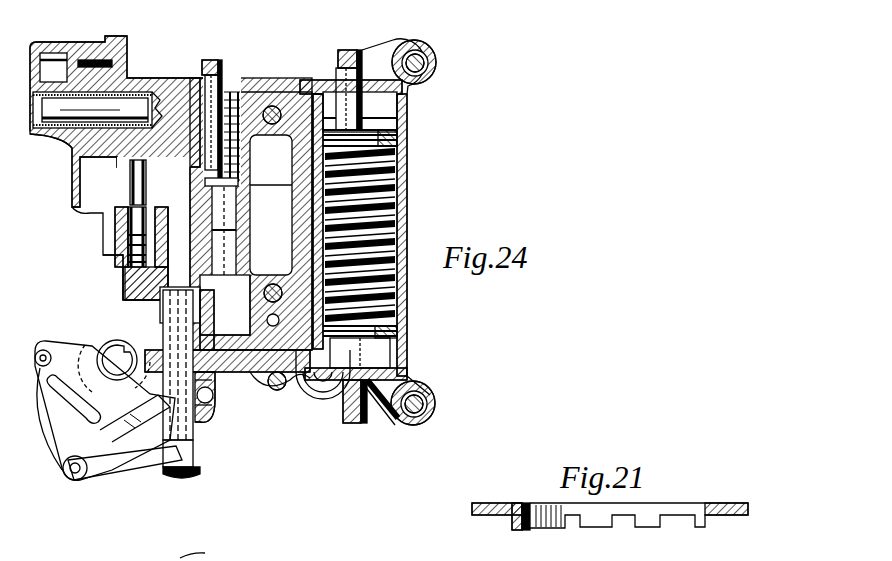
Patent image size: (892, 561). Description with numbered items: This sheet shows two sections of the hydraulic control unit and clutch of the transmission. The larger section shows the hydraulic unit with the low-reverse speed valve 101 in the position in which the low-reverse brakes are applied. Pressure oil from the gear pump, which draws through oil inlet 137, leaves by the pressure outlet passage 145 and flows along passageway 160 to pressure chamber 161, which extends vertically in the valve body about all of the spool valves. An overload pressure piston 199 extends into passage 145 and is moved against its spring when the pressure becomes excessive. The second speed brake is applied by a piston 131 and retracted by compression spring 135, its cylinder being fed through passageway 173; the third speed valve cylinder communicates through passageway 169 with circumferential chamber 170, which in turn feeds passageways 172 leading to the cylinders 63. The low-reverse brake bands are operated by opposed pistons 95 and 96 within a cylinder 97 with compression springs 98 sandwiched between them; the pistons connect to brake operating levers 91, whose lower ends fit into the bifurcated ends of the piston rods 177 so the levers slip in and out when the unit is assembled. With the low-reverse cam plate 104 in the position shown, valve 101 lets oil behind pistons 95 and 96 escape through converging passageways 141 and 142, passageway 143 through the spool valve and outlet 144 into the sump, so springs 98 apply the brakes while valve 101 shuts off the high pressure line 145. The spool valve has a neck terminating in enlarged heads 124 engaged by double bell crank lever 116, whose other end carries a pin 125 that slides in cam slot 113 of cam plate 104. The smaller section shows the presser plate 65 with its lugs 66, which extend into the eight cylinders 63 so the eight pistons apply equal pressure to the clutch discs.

In FIG. 24, the oil inlet 137 is at (74, 40).
In FIG. 24, the brake operating lever 91 is at (208, 60).
In FIG. 24, the piston rod 177 is at (226, 80).
In FIG. 24, the piston 96 is at (405, 128).
In FIG. 24, the compression spring 98 is at (405, 180).
In FIG. 24, the cylinder 97 is at (403, 215).
In FIG. 24, the piston 95 is at (410, 346).
In FIG. 24, the compression spring 135 is at (245, 164).
In FIG. 24, the piston 131 is at (240, 188).
In FIG. 24, the passageway 173 is at (238, 238).
In FIG. 24, the converging passageway 141 is at (308, 238).
In FIG. 24, the overload pressure piston 199 is at (150, 193).
In FIG. 24, the oil pressure passage 145 is at (84, 210).
In FIG. 24, the passageway 160 is at (105, 243).
In FIG. 24, the cam slot 113 is at (40, 308).
In FIG. 24, the low-reverse valve cam plate 104 is at (56, 312).
In FIG. 24, the outlet 144 is at (116, 324).
In FIG. 24, the pin 125 is at (57, 425).
In FIG. 24, the bell crank lever 116 is at (134, 478).
In FIG. 24, the enlarged head 124 is at (172, 478).
In FIG. 24, the low-reverse speed valve 101 is at (205, 440).
In FIG. 24, the passageway 143 is at (218, 380).
In FIG. 24, the passageway 169 is at (214, 402).
In FIG. 24, the pressure chamber 161 is at (213, 413).
In FIG. 24, the converging passageway 142 is at (328, 400).
In FIG. 24, the cylinder 63 is at (188, 557).
In FIG. 24, the passageway 172 is at (232, 558).
In FIG. 24, the circumferential chamber 170 is at (300, 560).
In FIG. 21, the presser plate 65 is at (517, 505).
In FIG. 21, the lug 66 is at (625, 528).